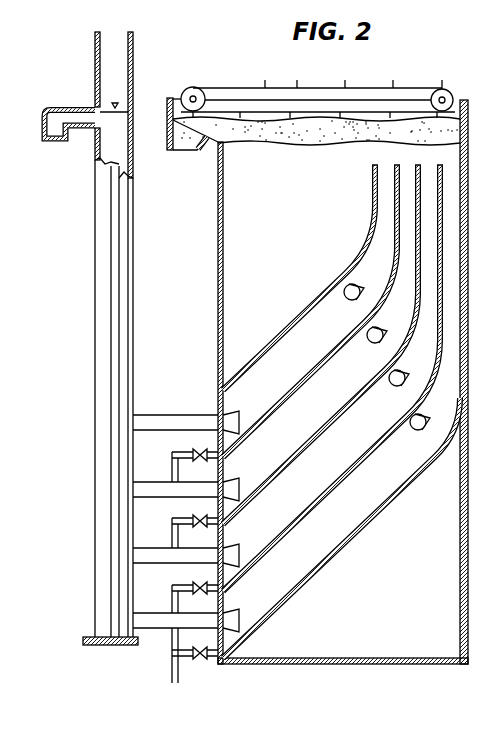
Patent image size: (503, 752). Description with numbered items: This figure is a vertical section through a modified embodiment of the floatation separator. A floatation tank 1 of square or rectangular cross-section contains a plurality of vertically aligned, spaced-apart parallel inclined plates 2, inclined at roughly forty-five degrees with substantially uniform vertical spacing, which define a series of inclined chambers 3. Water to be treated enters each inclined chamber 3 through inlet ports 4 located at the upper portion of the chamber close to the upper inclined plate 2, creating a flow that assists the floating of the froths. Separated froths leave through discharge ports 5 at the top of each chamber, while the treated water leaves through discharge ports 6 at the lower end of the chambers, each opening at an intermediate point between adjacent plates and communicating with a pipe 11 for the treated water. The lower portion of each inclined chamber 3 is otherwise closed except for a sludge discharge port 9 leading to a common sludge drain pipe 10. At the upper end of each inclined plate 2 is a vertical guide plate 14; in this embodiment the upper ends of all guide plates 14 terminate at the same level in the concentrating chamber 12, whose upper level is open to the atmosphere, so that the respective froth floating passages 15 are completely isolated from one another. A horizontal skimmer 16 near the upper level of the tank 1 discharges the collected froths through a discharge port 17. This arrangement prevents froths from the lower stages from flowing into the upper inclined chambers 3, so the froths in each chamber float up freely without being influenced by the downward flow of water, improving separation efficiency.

The floatation tank 1 is at (468, 515).
The inclined plates 2 is at (283, 336).
The inclined chambers 3 is at (307, 347).
The inlet ports 4 is at (347, 299).
The discharge ports for froths 5 is at (380, 258).
The discharge ports for treated water 6 is at (242, 419).
The sludge discharge port 9 is at (208, 463).
The sludge drain pipe 10 is at (171, 600).
The pipe for treated water 11 is at (95, 540).
The concentrating chamber 12 is at (301, 157).
The guide plates 14 is at (398, 208).
The froth floating passages 15 is at (402, 174).
The horizontal skimmer 16 is at (265, 80).
The discharge port for froths 17 is at (185, 150).